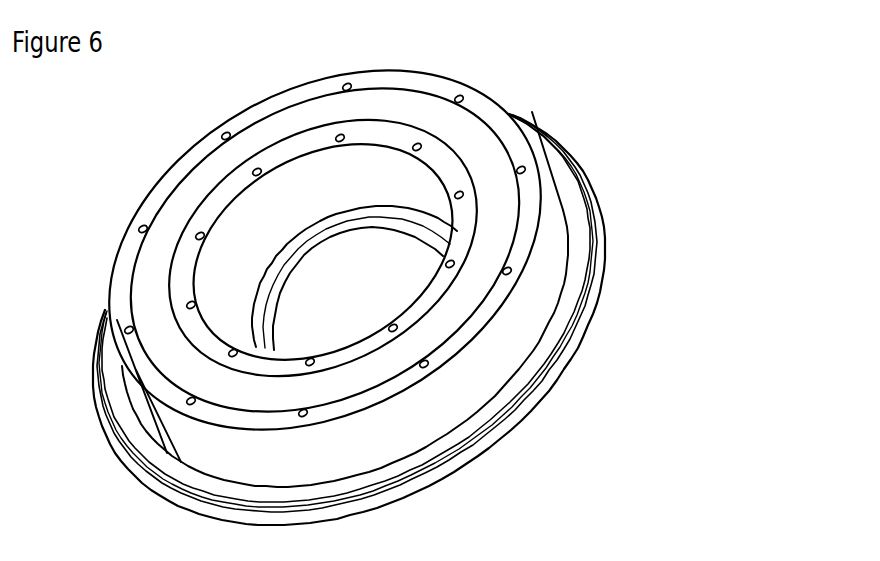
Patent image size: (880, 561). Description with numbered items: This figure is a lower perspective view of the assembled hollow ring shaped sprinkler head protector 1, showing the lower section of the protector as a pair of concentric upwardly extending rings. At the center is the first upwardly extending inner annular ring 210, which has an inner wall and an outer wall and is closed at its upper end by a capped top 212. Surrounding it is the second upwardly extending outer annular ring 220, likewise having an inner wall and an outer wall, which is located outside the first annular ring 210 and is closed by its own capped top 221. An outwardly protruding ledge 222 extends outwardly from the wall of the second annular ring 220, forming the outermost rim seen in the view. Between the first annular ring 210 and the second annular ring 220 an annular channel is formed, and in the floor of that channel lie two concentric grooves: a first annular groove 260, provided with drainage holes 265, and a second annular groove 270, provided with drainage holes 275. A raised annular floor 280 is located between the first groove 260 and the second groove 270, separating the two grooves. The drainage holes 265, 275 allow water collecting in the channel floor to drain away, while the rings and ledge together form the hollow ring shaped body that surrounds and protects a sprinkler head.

The sprinkler head protector 1 is at (76, 171).
The first upwardly extending inner annular ring 210 is at (282, 203).
The capped top of annular ring 212 is at (363, 250).
The second upwardly extending outer annular ring 220 is at (547, 219).
The capped top of annular ring 221 is at (562, 378).
The outwardly protruding ledge 222 is at (598, 172).
The first annular groove 260 is at (362, 348).
The drainage holes in first groove 265 is at (313, 366).
The second annular groove 270 is at (483, 318).
The drainage holes in second groove 275 is at (512, 270).
The raised annular floor 280 is at (485, 232).